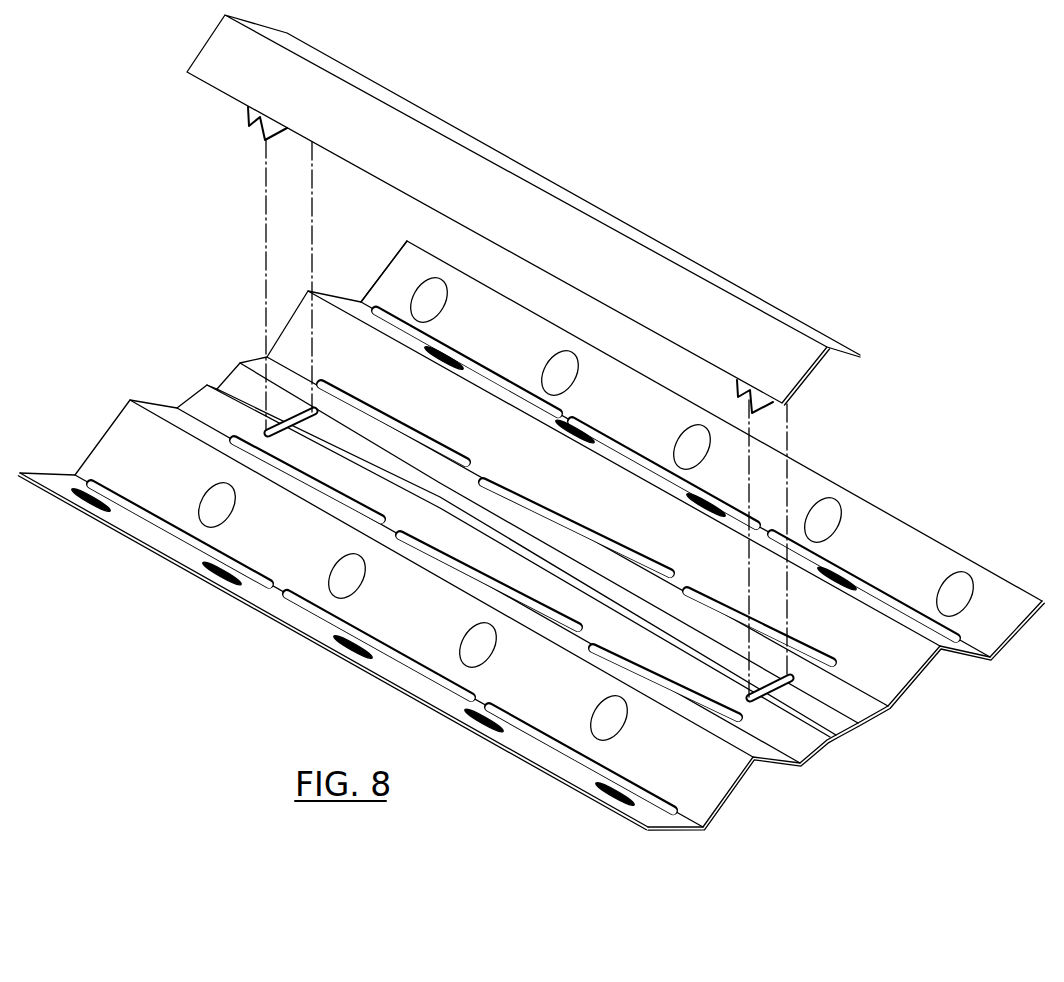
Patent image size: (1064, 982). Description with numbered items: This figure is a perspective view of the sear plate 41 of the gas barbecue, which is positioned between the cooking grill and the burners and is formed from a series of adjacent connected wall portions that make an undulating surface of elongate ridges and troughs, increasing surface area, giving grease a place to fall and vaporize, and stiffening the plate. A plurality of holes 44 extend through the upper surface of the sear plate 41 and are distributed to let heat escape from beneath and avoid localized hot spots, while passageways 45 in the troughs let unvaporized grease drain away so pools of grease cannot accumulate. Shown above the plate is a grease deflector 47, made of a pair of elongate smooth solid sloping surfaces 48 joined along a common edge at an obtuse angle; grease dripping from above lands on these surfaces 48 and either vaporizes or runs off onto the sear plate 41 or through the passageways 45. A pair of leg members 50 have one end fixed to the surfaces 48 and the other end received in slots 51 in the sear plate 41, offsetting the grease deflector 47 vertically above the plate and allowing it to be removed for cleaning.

The sear plate 41 is at (128, 420).
The holes 44 is at (206, 509).
The passageways 45 is at (310, 607).
The grease deflector 47 is at (485, 152).
The sloping surfaces 48 is at (647, 268).
The leg members 50 is at (773, 401).
The slots 51 is at (792, 689).